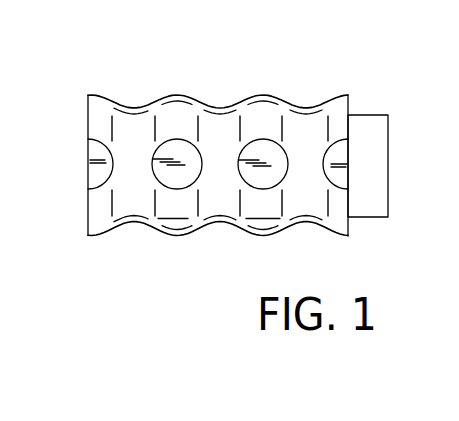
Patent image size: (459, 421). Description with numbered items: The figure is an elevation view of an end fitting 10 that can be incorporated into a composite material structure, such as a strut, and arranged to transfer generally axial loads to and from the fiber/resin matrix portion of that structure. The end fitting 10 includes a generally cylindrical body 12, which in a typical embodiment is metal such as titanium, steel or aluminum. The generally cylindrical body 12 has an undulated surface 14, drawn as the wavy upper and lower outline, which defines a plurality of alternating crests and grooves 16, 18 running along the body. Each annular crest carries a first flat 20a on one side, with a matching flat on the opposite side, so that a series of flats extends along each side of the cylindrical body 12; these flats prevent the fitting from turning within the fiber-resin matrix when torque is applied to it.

The end fitting 10 is at (70, 130).
The generally cylindrical body 12 is at (117, 239).
The undulated surface 14 is at (215, 228).
The crest 16 is at (177, 95).
The groove 18 is at (216, 108).
The first flat 20a is at (264, 160).